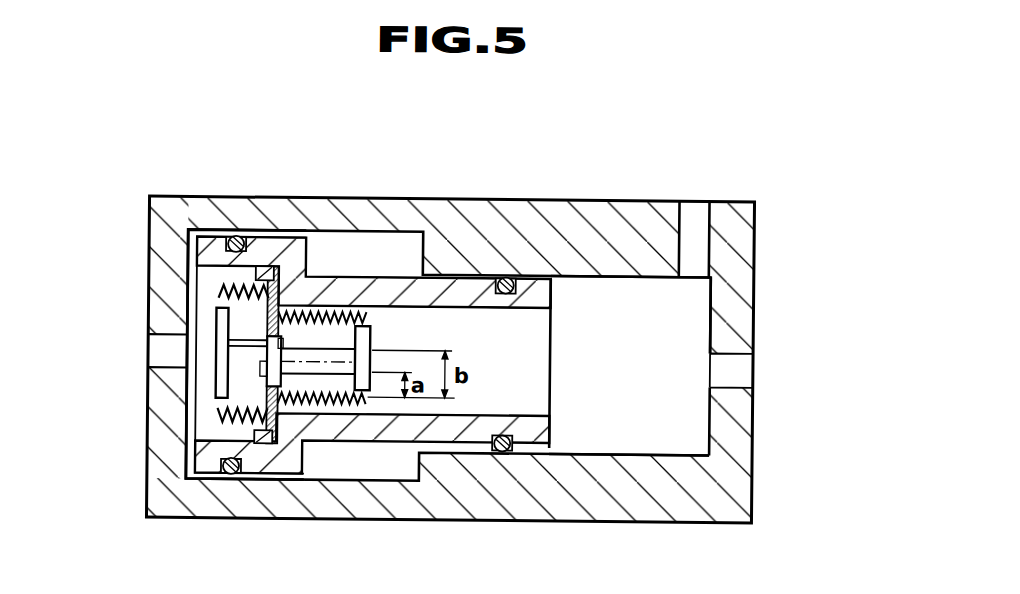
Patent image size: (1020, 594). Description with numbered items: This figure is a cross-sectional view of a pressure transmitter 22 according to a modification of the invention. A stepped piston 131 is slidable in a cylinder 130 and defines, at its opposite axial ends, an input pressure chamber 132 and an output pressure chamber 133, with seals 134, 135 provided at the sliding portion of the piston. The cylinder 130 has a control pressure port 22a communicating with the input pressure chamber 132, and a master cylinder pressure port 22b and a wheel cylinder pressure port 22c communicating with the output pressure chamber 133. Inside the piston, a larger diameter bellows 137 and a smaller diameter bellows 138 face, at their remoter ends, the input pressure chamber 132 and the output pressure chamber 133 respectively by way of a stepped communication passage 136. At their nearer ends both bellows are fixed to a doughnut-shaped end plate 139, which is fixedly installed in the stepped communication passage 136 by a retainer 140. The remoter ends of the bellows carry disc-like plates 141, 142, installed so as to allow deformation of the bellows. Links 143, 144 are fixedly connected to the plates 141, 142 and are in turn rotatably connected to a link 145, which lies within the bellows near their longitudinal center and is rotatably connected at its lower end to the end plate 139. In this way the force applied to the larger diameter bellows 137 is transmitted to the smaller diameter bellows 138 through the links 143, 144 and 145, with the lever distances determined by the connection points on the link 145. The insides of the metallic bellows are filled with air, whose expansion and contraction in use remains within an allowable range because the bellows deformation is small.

The pressure transmitter 22 is at (153, 152).
The control pressure port 22a is at (167, 357).
The master cylinder pressure port 22b is at (692, 220).
The wheel cylinder pressure port 22c is at (745, 370).
The cylinder 130 is at (632, 222).
The stepped piston 131 is at (255, 474).
The input pressure chamber 132 is at (186, 468).
The output pressure chamber 133 is at (583, 438).
The seal 134 is at (232, 237).
The seal 135 is at (507, 280).
The stepped communication passage 136 is at (463, 402).
The larger diameter bellows 137 is at (217, 291).
The smaller diameter bellows 138 is at (362, 342).
The doughnut-shaped end plate 139 is at (281, 272).
The retainer 140 is at (262, 270).
The disc-like plate 141 is at (215, 388).
The disc-like plate 142 is at (430, 297).
The link 143 is at (240, 342).
The link 144 is at (337, 376).
The link 145 is at (270, 386).